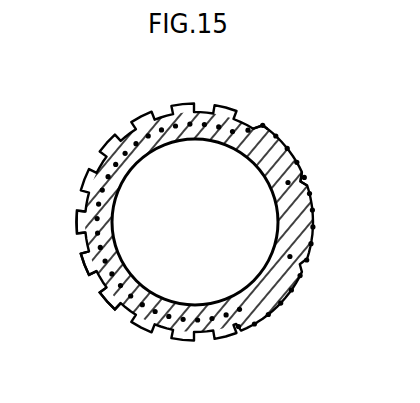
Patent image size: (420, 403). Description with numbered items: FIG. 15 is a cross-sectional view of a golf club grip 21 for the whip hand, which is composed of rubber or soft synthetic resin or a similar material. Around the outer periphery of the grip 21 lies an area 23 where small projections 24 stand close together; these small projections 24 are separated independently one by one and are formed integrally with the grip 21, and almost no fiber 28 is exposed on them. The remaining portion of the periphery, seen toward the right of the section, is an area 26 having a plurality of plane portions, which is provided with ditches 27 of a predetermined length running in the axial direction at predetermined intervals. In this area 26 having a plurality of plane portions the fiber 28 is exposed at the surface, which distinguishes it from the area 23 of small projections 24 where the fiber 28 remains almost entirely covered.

The grip 21 is at (268, 112).
The area 23 is at (118, 313).
The small projections 24 is at (90, 274).
The area having a plurality of plane portions 26 is at (315, 222).
The ditches 27 is at (301, 178).
The fiber 28 is at (270, 125).